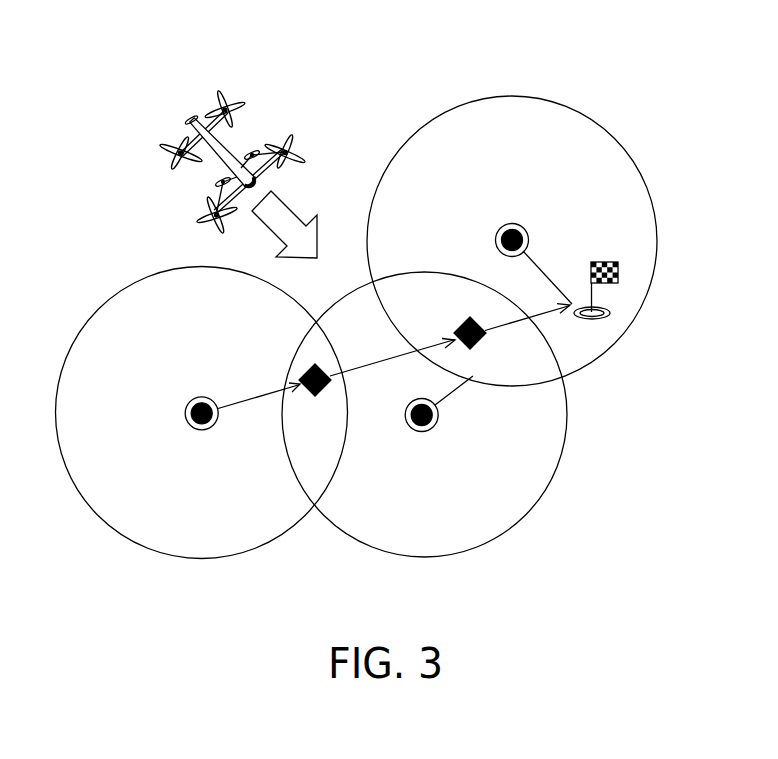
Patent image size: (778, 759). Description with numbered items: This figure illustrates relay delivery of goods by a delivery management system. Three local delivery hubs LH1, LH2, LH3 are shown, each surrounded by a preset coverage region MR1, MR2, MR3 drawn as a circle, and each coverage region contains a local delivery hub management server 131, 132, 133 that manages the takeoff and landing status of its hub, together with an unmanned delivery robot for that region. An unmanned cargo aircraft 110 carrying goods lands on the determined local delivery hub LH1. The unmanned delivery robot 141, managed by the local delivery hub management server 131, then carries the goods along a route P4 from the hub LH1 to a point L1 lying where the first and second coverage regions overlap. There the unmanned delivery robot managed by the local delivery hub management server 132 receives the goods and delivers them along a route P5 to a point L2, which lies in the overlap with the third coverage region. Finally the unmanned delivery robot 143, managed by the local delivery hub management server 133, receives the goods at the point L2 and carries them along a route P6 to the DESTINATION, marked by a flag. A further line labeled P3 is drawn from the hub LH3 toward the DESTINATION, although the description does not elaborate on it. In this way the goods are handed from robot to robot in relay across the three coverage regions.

The unmanned cargo aircraft 110 is at (187, 120).
The local delivery hub management server 131 is at (186, 398).
The local delivery hub management server 132 is at (473, 426).
The local delivery hub management server 133 is at (557, 232).
The unmanned delivery robot 141 is at (274, 422).
The unmanned delivery robot 143 is at (462, 286).
The coverage region MR1 is at (108, 300).
The coverage region MR2 is at (563, 452).
The coverage region MR3 is at (648, 183).
The local delivery hub LH1 is at (188, 403).
The local delivery hub LH2 is at (435, 425).
The local delivery hub LH3 is at (517, 227).
The point L1 is at (314, 367).
The point L2 is at (478, 346).
The path from third hub to destination P3 is at (545, 267).
The route P4 is at (242, 402).
The route P5 is at (378, 363).
The route P6 is at (513, 322).
The destination DESTINATION is at (613, 307).